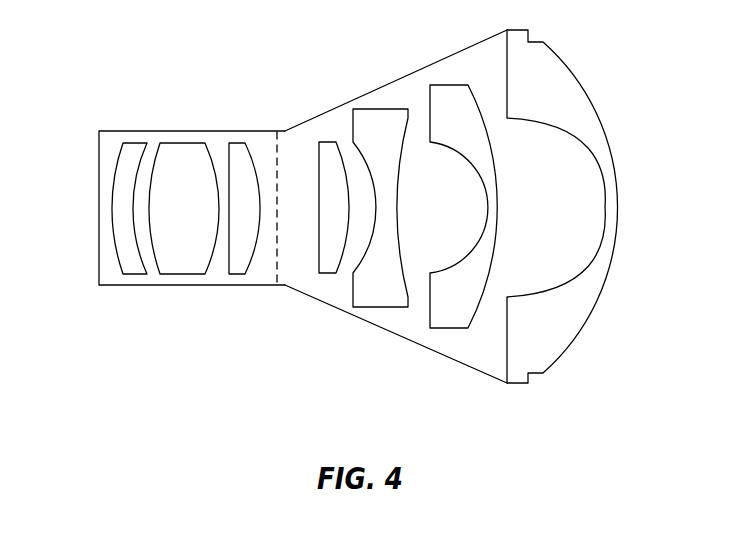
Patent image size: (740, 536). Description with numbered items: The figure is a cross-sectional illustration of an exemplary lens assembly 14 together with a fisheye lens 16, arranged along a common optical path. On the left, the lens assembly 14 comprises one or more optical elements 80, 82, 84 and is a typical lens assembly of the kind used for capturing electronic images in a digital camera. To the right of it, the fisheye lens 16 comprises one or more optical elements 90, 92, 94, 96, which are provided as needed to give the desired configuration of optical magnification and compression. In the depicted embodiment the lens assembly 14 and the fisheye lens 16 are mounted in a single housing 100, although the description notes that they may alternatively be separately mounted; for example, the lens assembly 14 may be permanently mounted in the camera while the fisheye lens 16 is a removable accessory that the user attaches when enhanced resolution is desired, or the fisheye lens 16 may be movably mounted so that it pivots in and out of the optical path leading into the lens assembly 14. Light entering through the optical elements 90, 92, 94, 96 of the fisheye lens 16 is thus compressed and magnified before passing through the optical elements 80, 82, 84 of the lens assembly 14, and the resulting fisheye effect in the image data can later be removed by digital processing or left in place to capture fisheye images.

The lens assembly 14 is at (148, 121).
The fisheye lens 16 is at (388, 70).
The single housing 100 is at (265, 131).
The optical element 80 is at (137, 274).
The optical element 82 is at (185, 274).
The optical element 84 is at (237, 274).
The optical element 90 is at (327, 273).
The optical element 92 is at (386, 307).
The optical element 94 is at (452, 328).
The optical element 96 is at (522, 383).